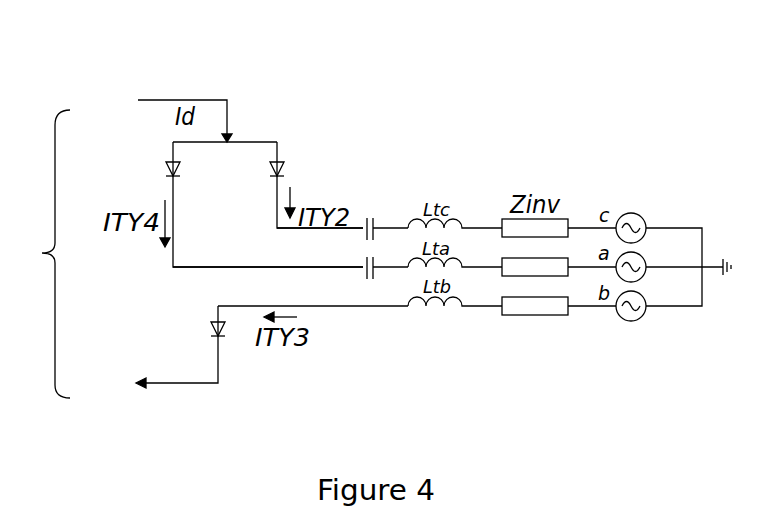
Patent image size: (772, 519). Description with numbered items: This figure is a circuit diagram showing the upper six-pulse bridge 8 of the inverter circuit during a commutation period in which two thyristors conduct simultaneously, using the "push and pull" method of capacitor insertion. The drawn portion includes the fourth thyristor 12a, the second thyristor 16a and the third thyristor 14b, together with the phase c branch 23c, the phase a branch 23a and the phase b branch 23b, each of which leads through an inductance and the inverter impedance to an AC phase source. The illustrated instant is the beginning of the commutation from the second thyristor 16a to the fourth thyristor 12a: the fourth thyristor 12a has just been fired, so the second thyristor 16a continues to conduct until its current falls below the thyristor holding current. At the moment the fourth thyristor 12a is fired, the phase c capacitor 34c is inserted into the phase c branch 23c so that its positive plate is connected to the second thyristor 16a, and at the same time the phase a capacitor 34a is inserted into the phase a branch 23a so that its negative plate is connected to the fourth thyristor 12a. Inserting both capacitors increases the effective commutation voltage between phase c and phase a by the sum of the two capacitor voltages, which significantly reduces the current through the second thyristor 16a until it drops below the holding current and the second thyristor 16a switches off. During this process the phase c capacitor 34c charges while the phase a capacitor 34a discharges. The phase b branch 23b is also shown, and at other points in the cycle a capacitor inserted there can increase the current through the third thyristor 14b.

The upper 6-pulse bridge 8 is at (45, 254).
The thyristor TY4 12a is at (170, 160).
The thyristor TY2 16a is at (272, 164).
The thyristor TY3 14b is at (221, 333).
The capacitor CapYc 34c is at (387, 226).
The capacitor CapYa 34a is at (385, 267).
The phase a branch 23a is at (323, 268).
The phase b branch 23b is at (310, 306).
The phase c branch 23c is at (313, 228).